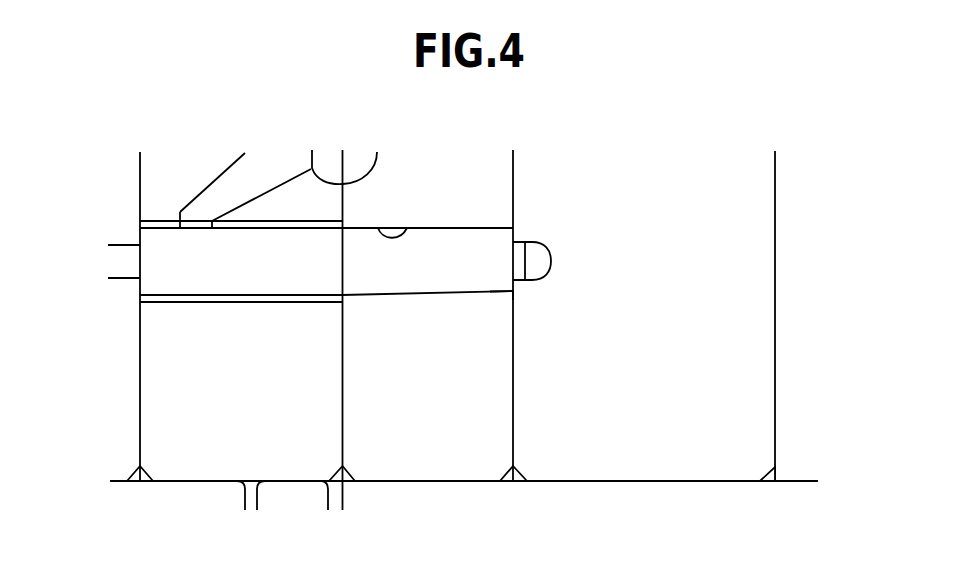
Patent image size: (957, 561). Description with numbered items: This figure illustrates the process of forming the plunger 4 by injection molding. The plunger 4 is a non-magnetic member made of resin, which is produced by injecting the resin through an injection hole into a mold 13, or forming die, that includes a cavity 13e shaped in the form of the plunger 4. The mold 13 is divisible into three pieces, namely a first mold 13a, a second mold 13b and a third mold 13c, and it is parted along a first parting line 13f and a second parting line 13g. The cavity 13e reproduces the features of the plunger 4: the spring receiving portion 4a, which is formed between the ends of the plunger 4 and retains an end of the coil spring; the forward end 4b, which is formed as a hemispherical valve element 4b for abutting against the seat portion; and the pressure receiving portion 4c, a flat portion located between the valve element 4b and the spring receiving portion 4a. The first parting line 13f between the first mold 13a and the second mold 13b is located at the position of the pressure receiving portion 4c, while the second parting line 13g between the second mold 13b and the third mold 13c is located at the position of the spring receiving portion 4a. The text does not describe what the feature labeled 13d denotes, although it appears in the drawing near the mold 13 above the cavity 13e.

The mold 13 is at (790, 175).
The first mold 13a is at (657, 457).
The second mold 13b is at (412, 457).
The third mold 13c is at (192, 455).
The engaging claws 13d is at (262, 175).
The cavity 13e is at (407, 228).
The first parting line 13f is at (513, 433).
The second parting line 13g is at (343, 433).
The plunger 4 is at (229, 277).
The spring receiving portion 4a is at (343, 300).
The valve element 4b is at (538, 250).
The pressure receiving portion 4c is at (515, 288).